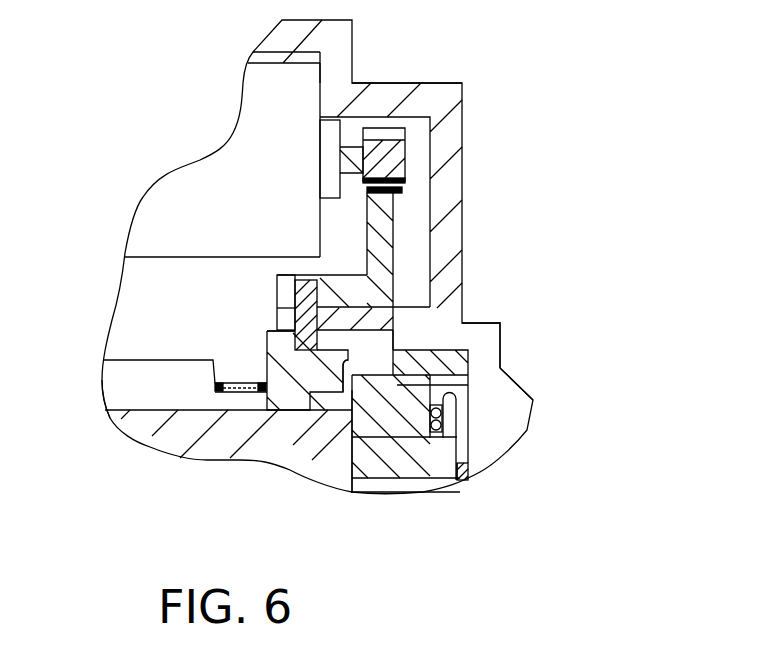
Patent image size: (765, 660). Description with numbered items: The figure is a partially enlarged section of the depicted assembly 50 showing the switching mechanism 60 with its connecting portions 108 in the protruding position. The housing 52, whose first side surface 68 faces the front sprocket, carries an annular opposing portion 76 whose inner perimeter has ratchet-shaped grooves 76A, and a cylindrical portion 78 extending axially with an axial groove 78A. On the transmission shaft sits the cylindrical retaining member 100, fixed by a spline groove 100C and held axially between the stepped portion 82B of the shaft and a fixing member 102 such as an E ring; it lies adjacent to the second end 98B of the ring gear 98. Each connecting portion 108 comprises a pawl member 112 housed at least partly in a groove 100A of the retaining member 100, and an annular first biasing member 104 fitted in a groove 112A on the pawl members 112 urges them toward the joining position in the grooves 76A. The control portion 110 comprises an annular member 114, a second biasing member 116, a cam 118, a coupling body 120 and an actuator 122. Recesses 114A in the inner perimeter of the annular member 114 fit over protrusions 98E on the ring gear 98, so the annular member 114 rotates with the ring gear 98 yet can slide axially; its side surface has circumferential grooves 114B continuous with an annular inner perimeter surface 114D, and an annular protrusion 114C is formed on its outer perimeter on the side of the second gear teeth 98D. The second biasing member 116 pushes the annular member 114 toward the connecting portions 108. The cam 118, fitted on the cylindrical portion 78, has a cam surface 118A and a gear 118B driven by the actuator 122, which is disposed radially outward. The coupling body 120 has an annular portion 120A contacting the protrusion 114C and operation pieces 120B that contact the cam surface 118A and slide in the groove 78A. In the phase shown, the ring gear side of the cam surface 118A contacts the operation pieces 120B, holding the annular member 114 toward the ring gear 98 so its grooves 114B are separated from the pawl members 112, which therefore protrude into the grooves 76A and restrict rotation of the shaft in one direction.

The hinge assembly 50 is at (536, 130).
The housing 52 is at (462, 133).
The switching mechanism 60 is at (516, 247).
The first side surface 68 is at (463, 85).
The opposing portion 76 is at (462, 350).
The grooves 76A is at (478, 380).
The cylindrical portion 78 is at (297, 316).
The groove 78A is at (340, 276).
The stepped portion 82B is at (352, 462).
The ring gear 98 is at (132, 360).
The second end 98B is at (380, 470).
The second gear teeth 98D is at (118, 358).
The protrusions 98E is at (347, 400).
The retaining member 100 is at (425, 487).
The groove 100A is at (437, 470).
The spline groove 100C is at (392, 490).
The fixing member 102 is at (467, 472).
The first biasing member 104 is at (457, 476).
The connecting portions 108 is at (228, 430).
The control portion 110 is at (253, 240).
The pawl member 112 is at (468, 418).
The groove 112A is at (470, 388).
The annular member 114 is at (267, 406).
The recesses 114A is at (272, 418).
The grooves 114B is at (360, 328).
The annular protrusion 114C is at (275, 332).
The inner perimeter surface 114D is at (355, 372).
The second biasing member 116 is at (240, 384).
The cam 118 is at (393, 256).
The cam surface 118A is at (305, 272).
The gear 118B is at (405, 186).
The coupling body 120 is at (280, 286).
The annular portion 120A is at (343, 362).
The operation pieces 120B is at (290, 274).
The actuator 122 is at (315, 88).